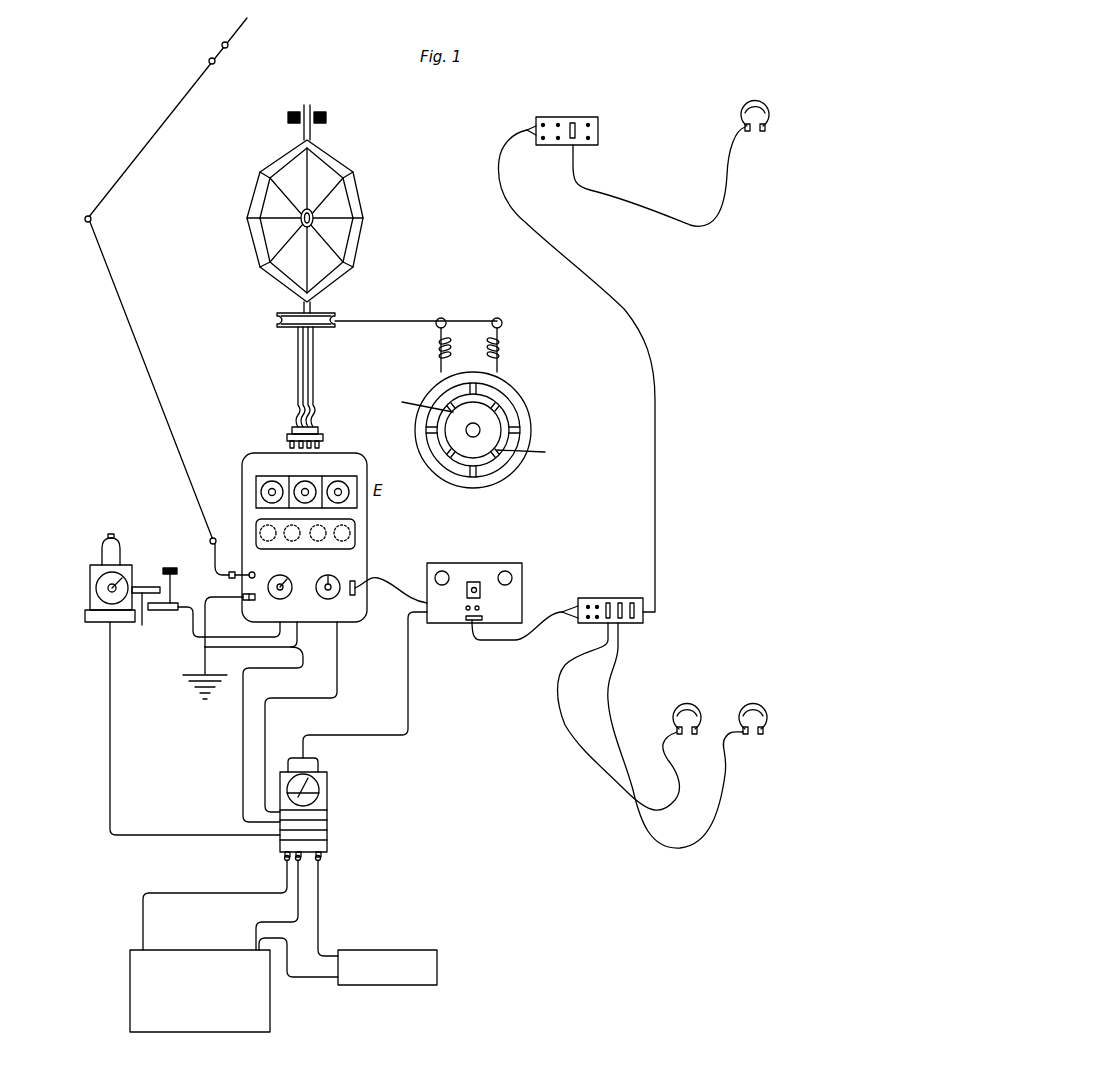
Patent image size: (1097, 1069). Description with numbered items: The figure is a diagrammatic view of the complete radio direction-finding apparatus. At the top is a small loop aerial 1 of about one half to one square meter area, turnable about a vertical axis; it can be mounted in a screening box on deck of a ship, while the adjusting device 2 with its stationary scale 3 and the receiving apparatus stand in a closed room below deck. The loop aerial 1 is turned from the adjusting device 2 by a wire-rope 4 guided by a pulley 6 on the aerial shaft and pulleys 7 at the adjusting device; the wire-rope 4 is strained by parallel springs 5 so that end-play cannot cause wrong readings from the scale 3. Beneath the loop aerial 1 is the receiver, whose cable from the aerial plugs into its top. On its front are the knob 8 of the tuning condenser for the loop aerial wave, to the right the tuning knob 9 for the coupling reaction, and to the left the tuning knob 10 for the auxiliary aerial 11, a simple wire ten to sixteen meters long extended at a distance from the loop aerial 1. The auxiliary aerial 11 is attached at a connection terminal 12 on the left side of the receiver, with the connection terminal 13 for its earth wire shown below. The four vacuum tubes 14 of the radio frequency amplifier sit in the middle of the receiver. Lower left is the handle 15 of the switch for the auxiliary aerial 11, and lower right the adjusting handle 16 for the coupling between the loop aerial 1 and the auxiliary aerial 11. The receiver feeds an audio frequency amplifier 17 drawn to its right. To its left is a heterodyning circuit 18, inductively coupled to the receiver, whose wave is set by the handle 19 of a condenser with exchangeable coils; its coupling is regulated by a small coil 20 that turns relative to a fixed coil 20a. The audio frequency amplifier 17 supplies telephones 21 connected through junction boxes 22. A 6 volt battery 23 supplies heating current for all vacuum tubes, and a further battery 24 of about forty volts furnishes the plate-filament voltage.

The loop aerial 1 is at (311, 209).
The adjusting device 2 is at (514, 466).
The stationary scale 3 is at (493, 427).
The wire-rope 4 is at (378, 321).
The springs 5 is at (487, 346).
The pulley 6 is at (314, 318).
The pulleys 7 is at (493, 319).
The knob of the tuning condenser 8 is at (310, 482).
The tuning knob for the coupling reaction 9 is at (344, 483).
The tuning knob for the auxiliary aerial 10 is at (270, 483).
The auxiliary aerial 11 is at (166, 281).
The connection terminal 12 is at (254, 572).
The connection terminal for the earth wire 13 is at (253, 600).
The vacuum tubes 14 is at (292, 531).
The handle of the switch for the auxiliary aerial 15 is at (282, 599).
The adjusting handle for the coupling 16 is at (333, 598).
The audio frequency amplifier 17 is at (474, 583).
The heterodyning circuit 18 is at (101, 552).
The handle of a condenser 19 is at (118, 579).
The small coil 20 is at (177, 604).
The fixed coil 20a is at (146, 618).
The telephones 21 is at (695, 712).
The junction boxes 22 is at (589, 359).
The 6 volt battery 23 is at (212, 991).
The battery of about 40 volts 24 is at (399, 967).